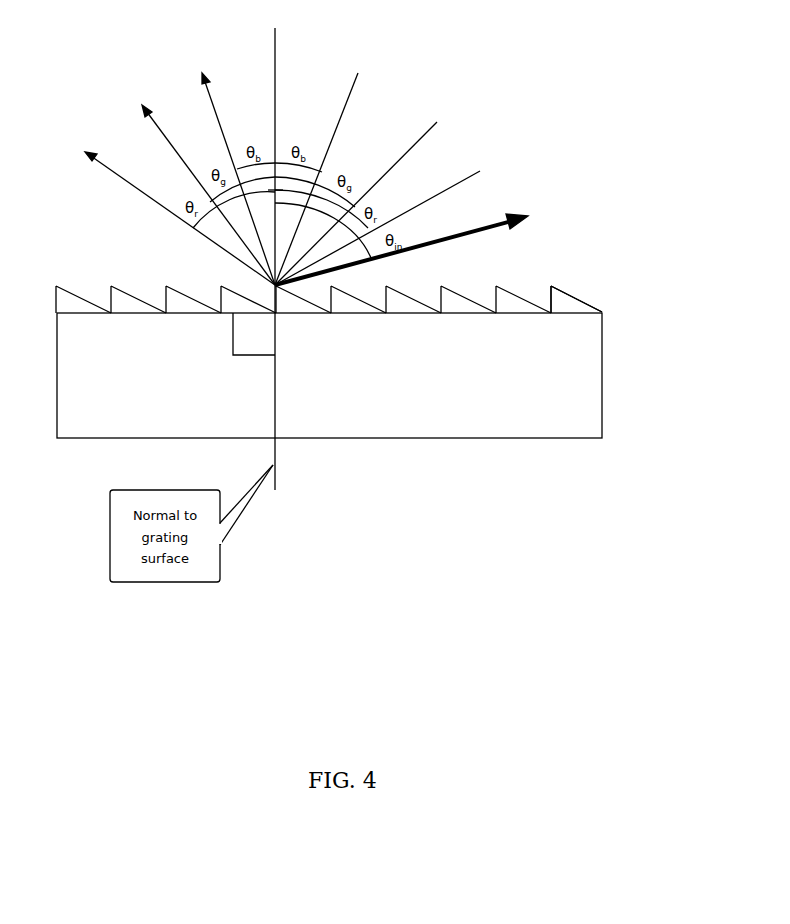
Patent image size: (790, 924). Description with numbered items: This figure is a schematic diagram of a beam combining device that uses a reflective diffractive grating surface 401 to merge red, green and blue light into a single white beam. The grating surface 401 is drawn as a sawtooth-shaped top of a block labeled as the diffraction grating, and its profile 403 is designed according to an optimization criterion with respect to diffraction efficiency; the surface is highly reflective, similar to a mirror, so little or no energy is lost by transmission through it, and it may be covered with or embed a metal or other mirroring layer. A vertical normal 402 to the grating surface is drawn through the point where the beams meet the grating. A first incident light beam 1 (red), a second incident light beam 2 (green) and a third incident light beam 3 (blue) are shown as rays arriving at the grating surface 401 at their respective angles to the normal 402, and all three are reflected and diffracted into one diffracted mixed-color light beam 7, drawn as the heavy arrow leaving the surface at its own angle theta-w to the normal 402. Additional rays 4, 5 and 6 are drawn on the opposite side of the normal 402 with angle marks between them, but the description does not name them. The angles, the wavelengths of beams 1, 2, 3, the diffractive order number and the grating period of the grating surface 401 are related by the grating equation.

The first incident light beam 1 is at (388, 218).
The second incident light beam 2 is at (364, 194).
The third incident light beam 3 is at (323, 174).
The fourth diffracted beam (blue, opposite order) 4 is at (233, 171).
The fifth diffracted beam (green, opposite order) 5 is at (201, 186).
The sixth diffracted beam (red, opposite order) 6 is at (171, 210).
The diffracted mixed-color light beam 7 is at (409, 244).
The reflective diffractive grating surface 401 is at (616, 312).
The normal 402 is at (287, 462).
The profile 403 is at (563, 298).